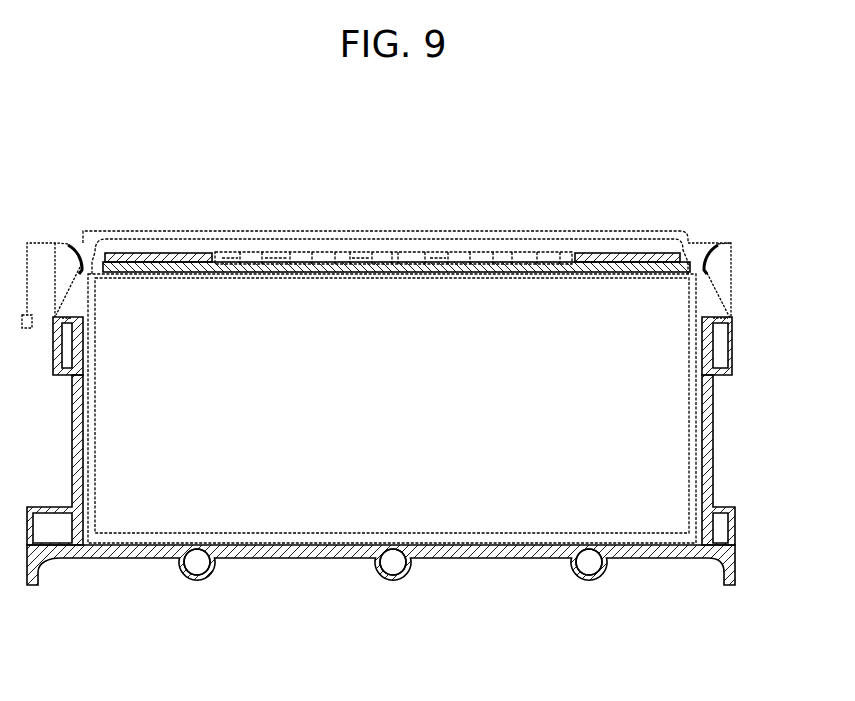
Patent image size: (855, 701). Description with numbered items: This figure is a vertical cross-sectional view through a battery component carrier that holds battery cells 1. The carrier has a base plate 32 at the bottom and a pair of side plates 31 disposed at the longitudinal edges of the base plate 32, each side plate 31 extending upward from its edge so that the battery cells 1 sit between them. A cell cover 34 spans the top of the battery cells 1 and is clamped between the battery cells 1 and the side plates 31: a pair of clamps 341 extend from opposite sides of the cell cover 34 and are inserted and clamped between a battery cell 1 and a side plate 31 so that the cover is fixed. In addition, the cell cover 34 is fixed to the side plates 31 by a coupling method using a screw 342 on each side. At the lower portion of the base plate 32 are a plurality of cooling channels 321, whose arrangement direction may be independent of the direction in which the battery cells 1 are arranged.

The battery cell 1 is at (587, 318).
The side plate 31 is at (72, 460).
The base plate 32 is at (482, 565).
The cooling channel 321 is at (207, 587).
The cell cover 34 is at (458, 231).
The clamp 341 is at (84, 310).
The screw 342 is at (54, 375).